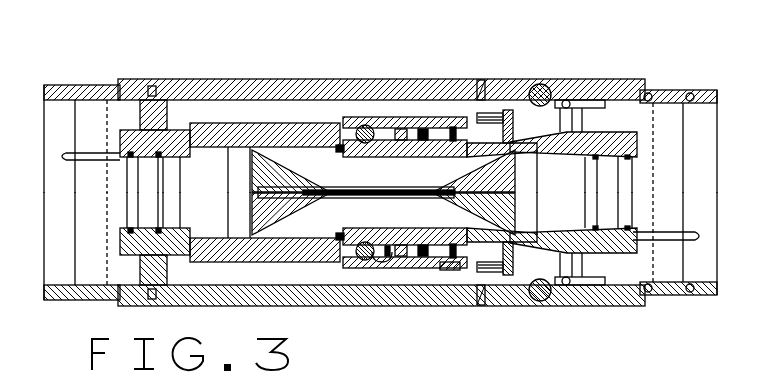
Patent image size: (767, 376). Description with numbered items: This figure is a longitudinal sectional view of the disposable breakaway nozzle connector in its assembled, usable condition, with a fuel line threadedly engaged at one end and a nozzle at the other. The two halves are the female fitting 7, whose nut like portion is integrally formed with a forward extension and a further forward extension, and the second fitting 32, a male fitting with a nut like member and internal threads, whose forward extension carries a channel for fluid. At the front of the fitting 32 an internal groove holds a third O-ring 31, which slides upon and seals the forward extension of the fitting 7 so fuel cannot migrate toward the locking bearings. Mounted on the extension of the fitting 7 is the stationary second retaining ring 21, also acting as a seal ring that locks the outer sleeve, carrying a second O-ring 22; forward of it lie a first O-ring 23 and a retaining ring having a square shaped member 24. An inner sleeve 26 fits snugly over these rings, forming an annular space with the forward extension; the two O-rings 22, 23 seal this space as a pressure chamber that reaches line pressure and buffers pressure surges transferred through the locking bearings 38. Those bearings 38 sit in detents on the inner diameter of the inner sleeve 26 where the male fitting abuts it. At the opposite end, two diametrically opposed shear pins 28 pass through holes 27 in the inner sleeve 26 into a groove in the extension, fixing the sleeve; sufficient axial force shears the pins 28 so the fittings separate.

The fitting 7 is at (388, 135).
The second retaining ring 21 is at (450, 268).
The second O-ring 22 is at (453, 126).
The first O-ring 23 is at (424, 129).
The retaining ring having a square shaped member 24 is at (377, 265).
The inner sleeve 26 is at (402, 129).
The holes 27 is at (529, 84).
The shear pins 28 is at (482, 79).
The third O-ring 31 is at (338, 140).
The second fitting 32 is at (240, 123).
The locking bearings 38 is at (364, 125).